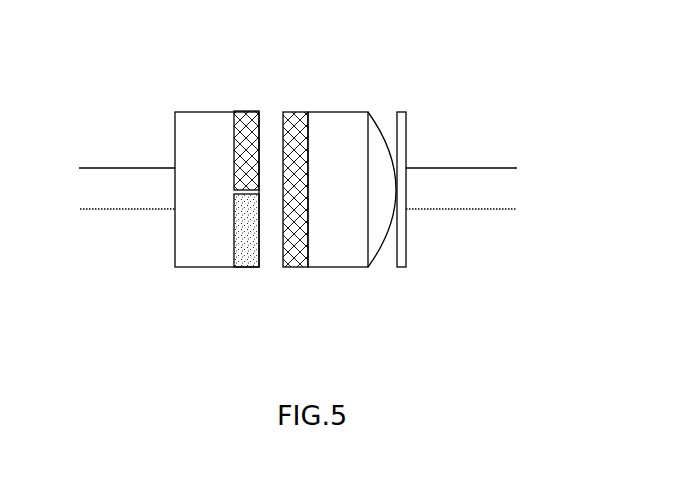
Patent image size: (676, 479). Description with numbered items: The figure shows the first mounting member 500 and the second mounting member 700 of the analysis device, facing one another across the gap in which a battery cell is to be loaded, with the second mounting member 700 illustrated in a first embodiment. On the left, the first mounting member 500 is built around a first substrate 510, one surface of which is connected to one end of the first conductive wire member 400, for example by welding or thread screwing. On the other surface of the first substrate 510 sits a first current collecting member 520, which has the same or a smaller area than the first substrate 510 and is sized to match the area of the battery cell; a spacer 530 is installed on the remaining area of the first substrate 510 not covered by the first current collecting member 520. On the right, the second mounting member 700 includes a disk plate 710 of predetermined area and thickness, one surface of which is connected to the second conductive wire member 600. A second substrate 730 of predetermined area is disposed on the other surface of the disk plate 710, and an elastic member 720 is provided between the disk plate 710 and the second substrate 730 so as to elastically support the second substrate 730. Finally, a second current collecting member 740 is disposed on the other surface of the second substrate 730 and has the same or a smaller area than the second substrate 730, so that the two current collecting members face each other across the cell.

The first conductive wire member 400 is at (117, 178).
The first mounting member 500 is at (173, 171).
The first substrate 510 is at (195, 257).
The first current collecting member 520 is at (247, 118).
The spacer 530 is at (243, 254).
The second conductive wire member 600 is at (475, 177).
The second mounting member 700 is at (408, 175).
The disk plate 710 is at (402, 262).
The elastic member 720 is at (377, 118).
The second substrate 730 is at (341, 257).
The second current collecting member 740 is at (295, 118).